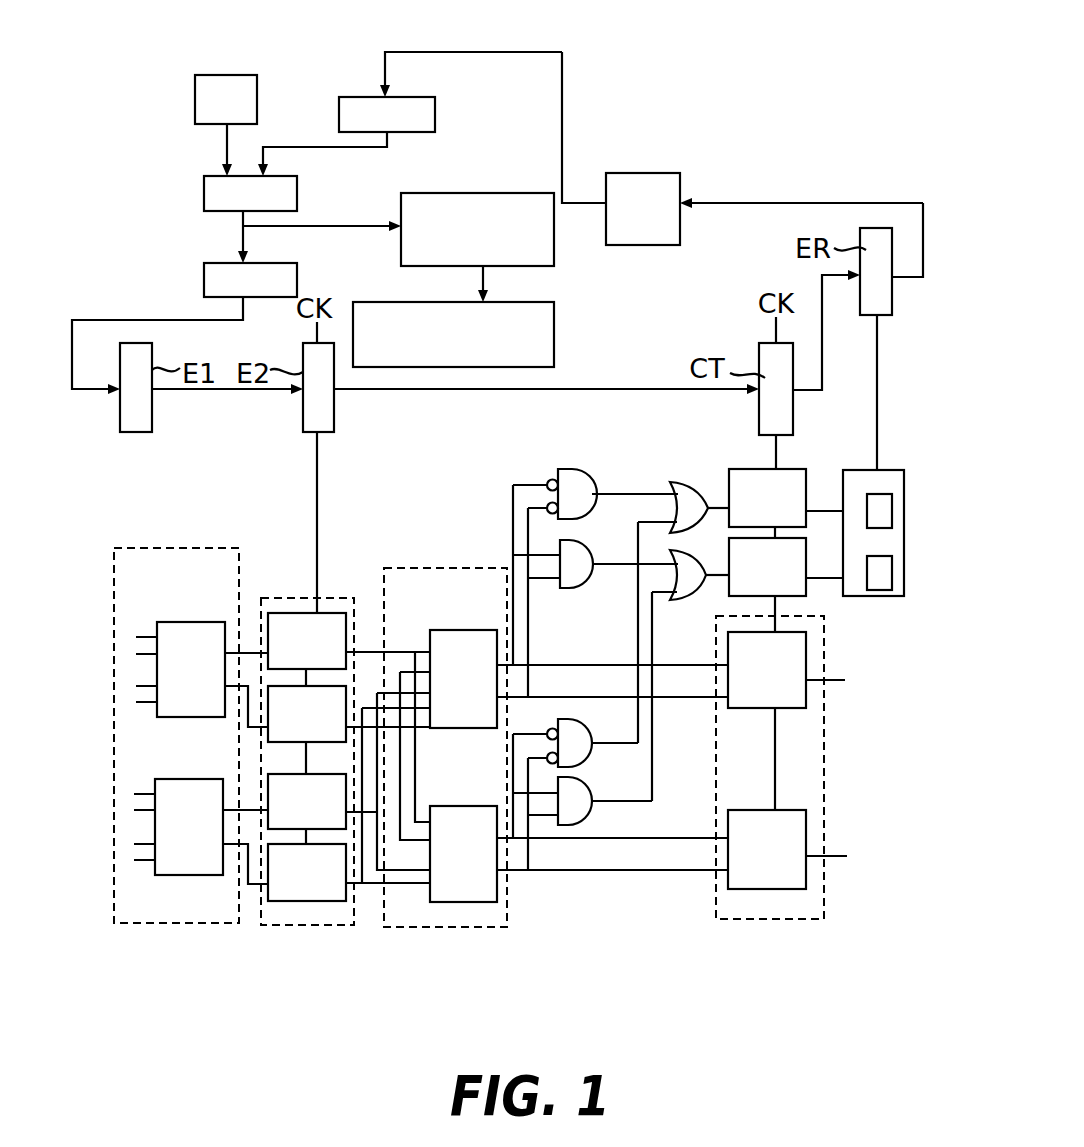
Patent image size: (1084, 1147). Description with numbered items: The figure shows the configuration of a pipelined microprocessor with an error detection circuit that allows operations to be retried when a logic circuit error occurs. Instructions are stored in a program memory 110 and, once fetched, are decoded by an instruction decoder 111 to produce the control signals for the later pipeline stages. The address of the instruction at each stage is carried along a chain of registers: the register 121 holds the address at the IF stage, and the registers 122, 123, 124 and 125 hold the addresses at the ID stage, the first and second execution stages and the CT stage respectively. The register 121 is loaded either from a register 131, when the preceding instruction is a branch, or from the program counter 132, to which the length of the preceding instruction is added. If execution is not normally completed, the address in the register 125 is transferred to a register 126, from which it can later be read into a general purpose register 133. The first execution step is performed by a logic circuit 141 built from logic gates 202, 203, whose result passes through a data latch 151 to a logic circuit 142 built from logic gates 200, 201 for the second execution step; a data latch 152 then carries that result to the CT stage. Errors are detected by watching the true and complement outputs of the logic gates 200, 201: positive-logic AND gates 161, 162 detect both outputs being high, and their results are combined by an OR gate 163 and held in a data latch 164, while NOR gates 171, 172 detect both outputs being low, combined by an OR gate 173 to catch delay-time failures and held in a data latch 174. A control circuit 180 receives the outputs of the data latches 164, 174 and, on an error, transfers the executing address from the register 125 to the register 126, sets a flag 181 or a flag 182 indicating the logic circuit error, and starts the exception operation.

The program memory 110 is at (435, 193).
The instruction decoder 111 is at (510, 302).
The register 121 is at (204, 188).
The register 122 is at (204, 276).
The register 123 is at (153, 422).
The register 124 is at (325, 408).
The register 125 is at (759, 352).
The register 126 is at (892, 285).
The register 131 is at (437, 130).
The program counter 132 is at (229, 75).
The general purpose register 133 is at (647, 173).
The logic circuit 141 is at (142, 548).
The logic circuit 142 is at (393, 568).
The data latch 151 is at (298, 598).
The data latch 152 is at (824, 790).
The AND gate 161 is at (577, 584).
The AND gate 162 is at (583, 822).
The OR gate 163 is at (687, 601).
The data latch 164 is at (807, 593).
The NOR gate 171 is at (581, 469).
The NOR gate 172 is at (566, 727).
The OR gate 173 is at (690, 481).
The data latch 174 is at (788, 466).
The control circuit 180 is at (885, 466).
The flag 181 is at (892, 568).
The flag 182 is at (892, 506).
The logic gate 200 is at (445, 630).
The logic gate 201 is at (445, 806).
The logic gate 202 is at (190, 622).
The logic gate 203 is at (190, 779).